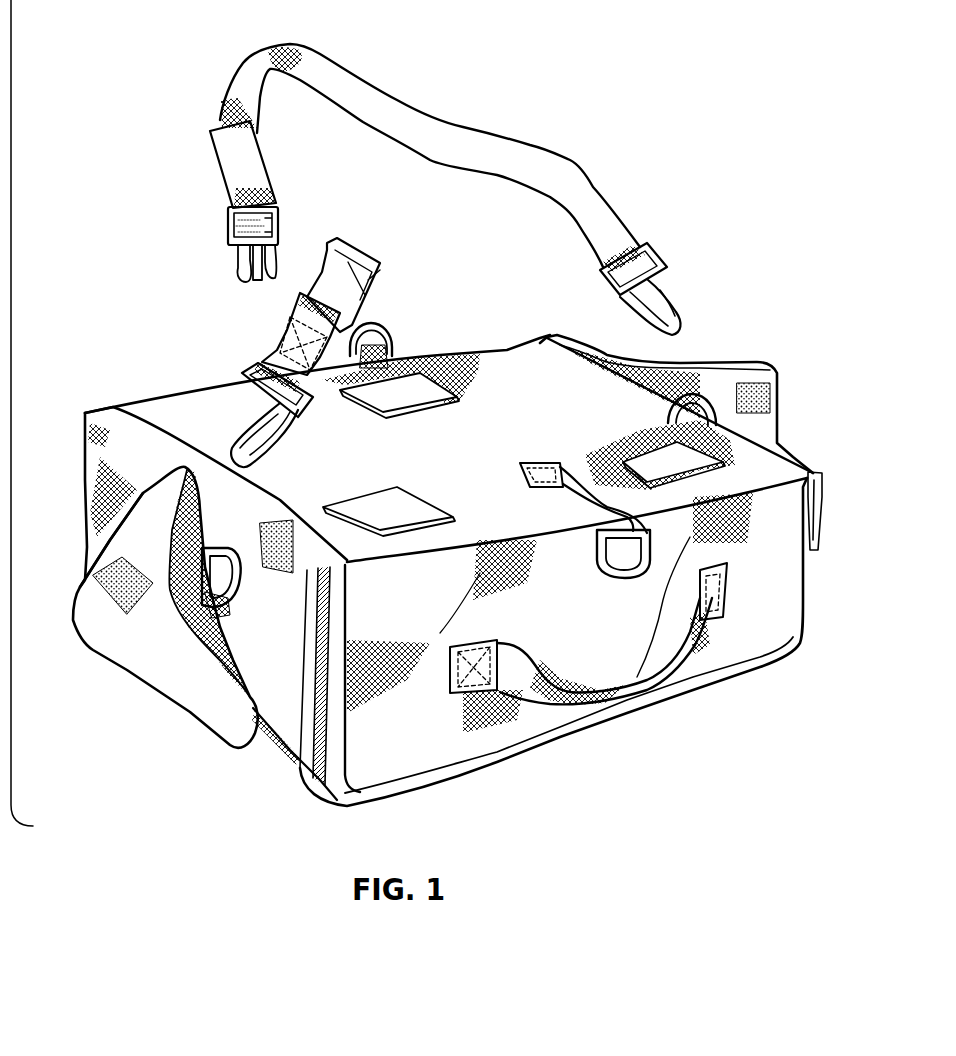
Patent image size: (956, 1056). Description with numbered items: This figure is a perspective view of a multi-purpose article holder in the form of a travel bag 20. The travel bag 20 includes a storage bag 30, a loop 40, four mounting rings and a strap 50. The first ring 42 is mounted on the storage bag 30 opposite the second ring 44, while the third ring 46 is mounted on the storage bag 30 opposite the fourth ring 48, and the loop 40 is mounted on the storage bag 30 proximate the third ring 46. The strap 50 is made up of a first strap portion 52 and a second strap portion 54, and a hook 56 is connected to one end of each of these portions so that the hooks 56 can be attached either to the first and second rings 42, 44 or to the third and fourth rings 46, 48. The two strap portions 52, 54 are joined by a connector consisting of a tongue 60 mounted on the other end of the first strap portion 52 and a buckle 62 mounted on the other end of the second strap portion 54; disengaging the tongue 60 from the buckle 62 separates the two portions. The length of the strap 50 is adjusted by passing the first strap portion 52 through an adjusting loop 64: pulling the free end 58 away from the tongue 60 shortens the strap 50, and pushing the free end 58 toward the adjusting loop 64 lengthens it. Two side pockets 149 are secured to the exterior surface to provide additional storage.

The travel bag 20 is at (580, 83).
The storage bag 30 is at (603, 750).
The loop 40 is at (573, 494).
The first ring 42 is at (703, 400).
The second ring 44 is at (234, 564).
The third ring 46 is at (630, 580).
The fourth ring 48 is at (395, 331).
The strap 50 is at (158, 272).
The first strap portion 52 is at (445, 131).
The second strap portion 54 is at (290, 338).
The hook 56 is at (673, 310).
The free end 58 is at (230, 157).
The tongue 60 is at (232, 265).
The buckle 62 is at (380, 263).
The adjusting loop 64 is at (280, 222).
The side pocket 149 is at (777, 410).